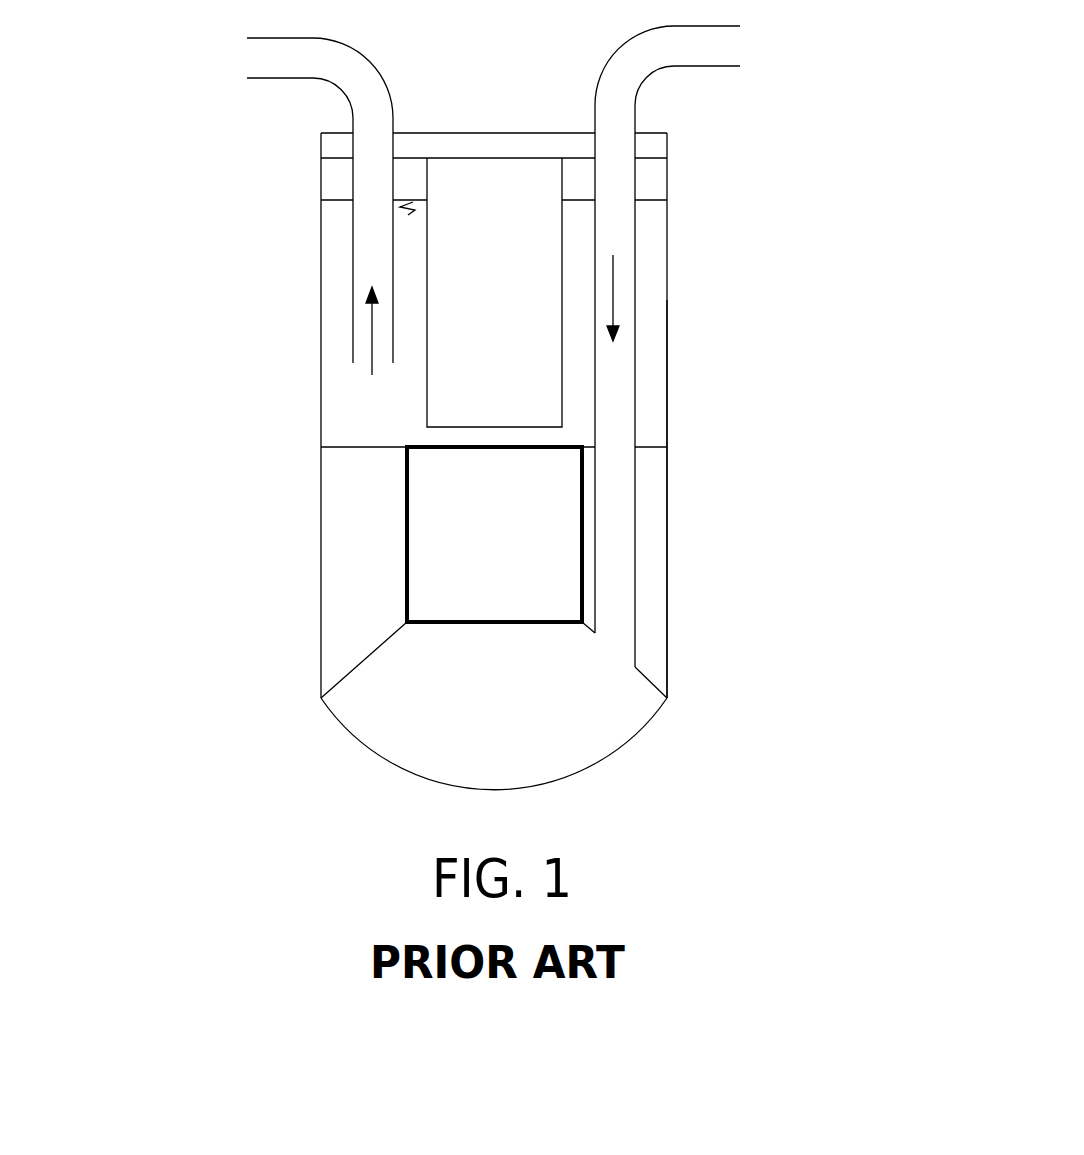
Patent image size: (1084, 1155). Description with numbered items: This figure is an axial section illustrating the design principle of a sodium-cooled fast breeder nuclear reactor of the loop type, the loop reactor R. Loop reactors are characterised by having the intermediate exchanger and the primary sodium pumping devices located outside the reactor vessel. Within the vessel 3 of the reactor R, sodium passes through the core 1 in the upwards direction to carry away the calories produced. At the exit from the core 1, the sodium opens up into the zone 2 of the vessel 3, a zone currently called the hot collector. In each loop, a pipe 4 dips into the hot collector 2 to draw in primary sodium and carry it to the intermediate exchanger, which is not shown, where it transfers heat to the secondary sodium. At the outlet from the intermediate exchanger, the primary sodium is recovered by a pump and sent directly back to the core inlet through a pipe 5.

The core 1 is at (438, 557).
The zone of the vessel (hot collector) 2 is at (367, 415).
The vessel 3 is at (317, 341).
The pipe 4 is at (348, 243).
The pipe 5 is at (640, 373).
The loop reactor R is at (688, 612).